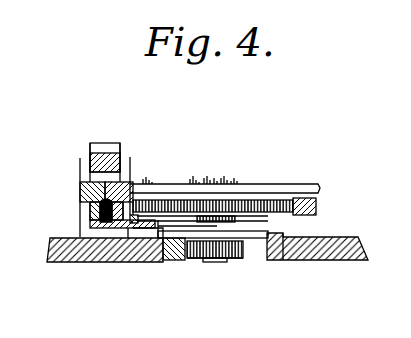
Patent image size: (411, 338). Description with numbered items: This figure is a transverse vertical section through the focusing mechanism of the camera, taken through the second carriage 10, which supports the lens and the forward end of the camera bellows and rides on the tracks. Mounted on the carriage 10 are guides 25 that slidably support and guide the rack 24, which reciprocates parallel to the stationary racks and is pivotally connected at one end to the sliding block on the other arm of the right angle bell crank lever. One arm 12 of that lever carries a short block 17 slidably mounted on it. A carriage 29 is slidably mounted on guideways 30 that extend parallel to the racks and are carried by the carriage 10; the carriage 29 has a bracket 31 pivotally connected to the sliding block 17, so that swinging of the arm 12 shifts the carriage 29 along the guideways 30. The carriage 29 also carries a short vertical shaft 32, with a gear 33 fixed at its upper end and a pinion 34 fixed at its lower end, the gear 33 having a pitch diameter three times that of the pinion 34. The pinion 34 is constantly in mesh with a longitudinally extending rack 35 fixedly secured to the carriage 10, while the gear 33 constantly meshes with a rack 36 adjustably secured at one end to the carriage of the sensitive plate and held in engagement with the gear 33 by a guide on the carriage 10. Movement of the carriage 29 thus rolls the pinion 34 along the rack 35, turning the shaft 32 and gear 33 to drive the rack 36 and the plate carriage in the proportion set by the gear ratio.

The second carriage 10 is at (65, 263).
The arm of right angle bell crank lever 12 is at (99, 184).
The short block 17 is at (80, 194).
The rack 24 is at (106, 156).
The guides 25 is at (84, 165).
The carriage 29 is at (252, 226).
The guideways 30 is at (160, 261).
The bracket 31 is at (153, 223).
The short vertical shaft 32 is at (215, 263).
The gear 33 is at (272, 206).
The pinion 34 is at (239, 262).
The longitudinally extending rack 35 is at (179, 262).
The rack 36 is at (317, 204).